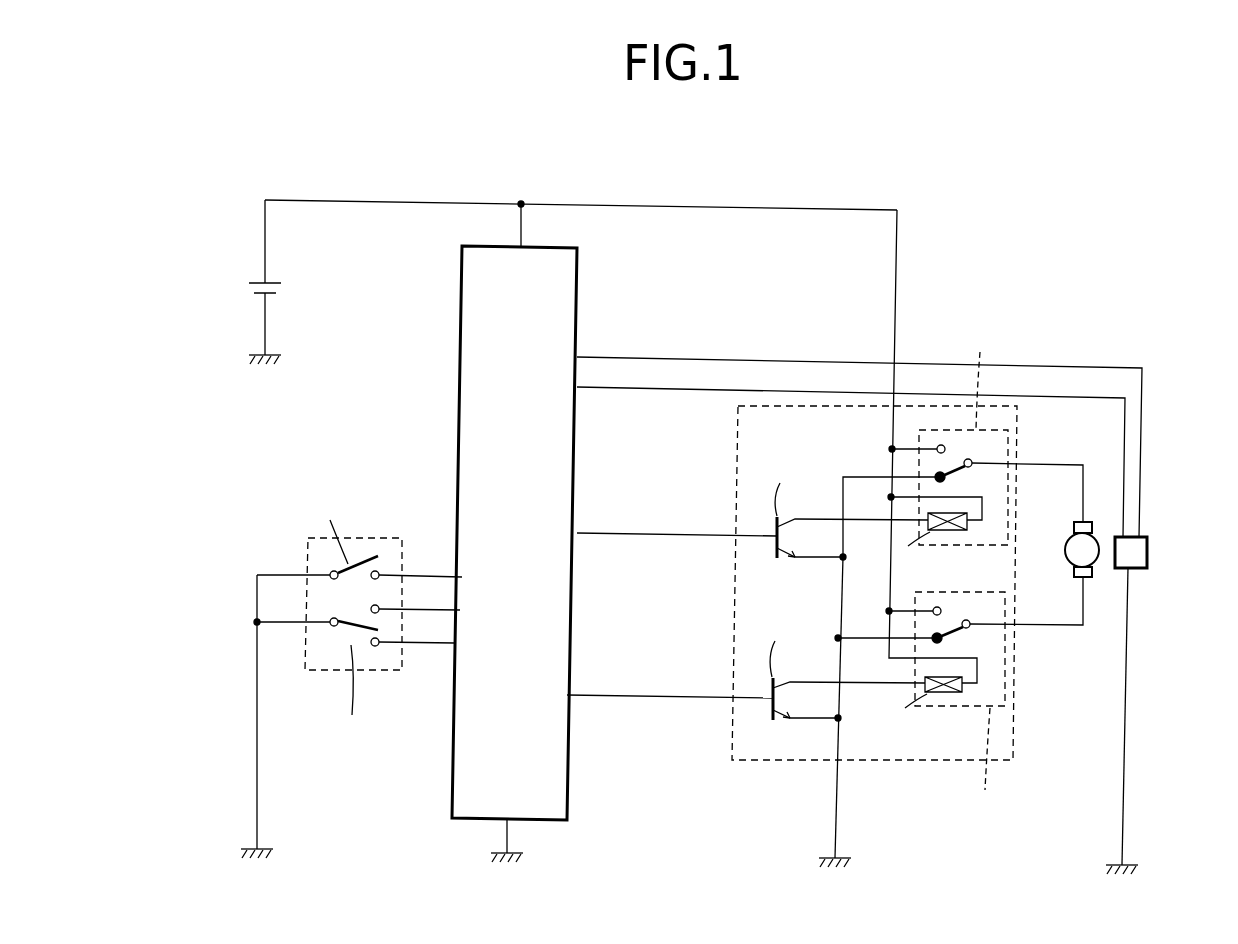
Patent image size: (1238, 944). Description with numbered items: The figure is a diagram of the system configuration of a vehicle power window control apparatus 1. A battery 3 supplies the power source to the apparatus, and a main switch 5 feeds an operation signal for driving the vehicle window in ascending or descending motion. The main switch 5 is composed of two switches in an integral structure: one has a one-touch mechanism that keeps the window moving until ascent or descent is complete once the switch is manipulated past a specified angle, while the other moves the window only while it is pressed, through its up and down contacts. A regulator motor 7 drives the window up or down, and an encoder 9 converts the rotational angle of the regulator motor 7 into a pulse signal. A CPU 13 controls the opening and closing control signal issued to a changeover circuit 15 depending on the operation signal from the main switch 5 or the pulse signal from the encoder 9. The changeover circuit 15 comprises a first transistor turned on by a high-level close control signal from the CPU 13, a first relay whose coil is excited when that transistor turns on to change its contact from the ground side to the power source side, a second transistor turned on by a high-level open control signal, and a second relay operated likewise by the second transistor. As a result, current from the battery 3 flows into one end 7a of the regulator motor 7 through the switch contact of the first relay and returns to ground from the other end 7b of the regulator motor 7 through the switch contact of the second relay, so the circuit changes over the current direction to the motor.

The vehicle power window control apparatus 1 is at (769, 174).
The battery 3 is at (283, 291).
The main switch 5 is at (385, 538).
The regulator motor 7 is at (1066, 545).
The one end of the regulator motor 7a is at (1092, 522).
The other end of the regulator motor 7b is at (1092, 577).
The encoder 9 is at (1147, 552).
The CPU 13 is at (578, 272).
The changeover circuit 15 is at (882, 762).